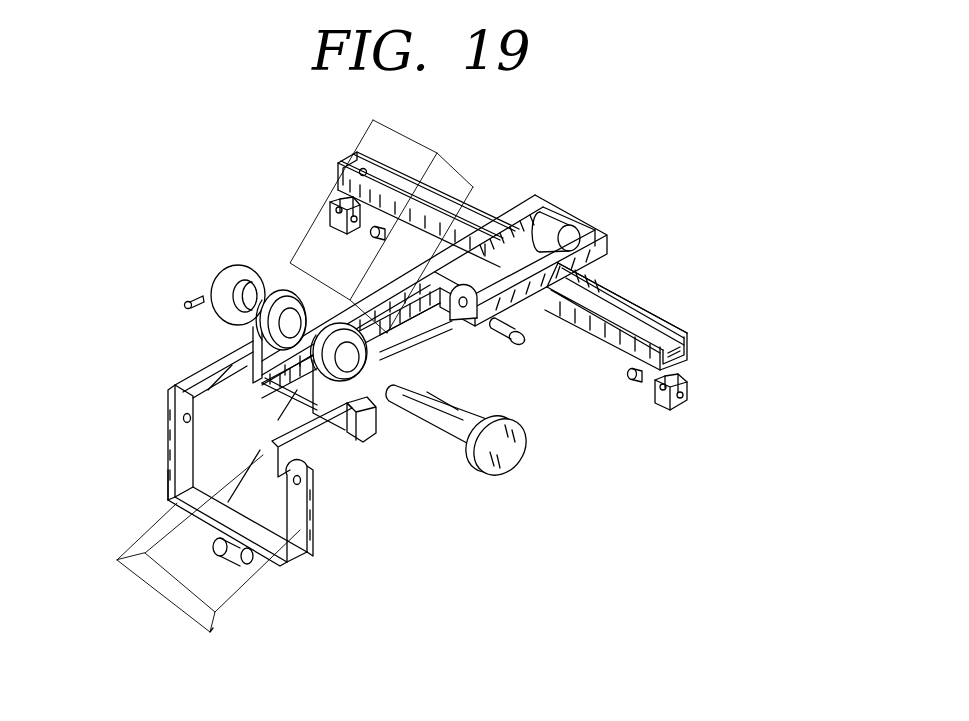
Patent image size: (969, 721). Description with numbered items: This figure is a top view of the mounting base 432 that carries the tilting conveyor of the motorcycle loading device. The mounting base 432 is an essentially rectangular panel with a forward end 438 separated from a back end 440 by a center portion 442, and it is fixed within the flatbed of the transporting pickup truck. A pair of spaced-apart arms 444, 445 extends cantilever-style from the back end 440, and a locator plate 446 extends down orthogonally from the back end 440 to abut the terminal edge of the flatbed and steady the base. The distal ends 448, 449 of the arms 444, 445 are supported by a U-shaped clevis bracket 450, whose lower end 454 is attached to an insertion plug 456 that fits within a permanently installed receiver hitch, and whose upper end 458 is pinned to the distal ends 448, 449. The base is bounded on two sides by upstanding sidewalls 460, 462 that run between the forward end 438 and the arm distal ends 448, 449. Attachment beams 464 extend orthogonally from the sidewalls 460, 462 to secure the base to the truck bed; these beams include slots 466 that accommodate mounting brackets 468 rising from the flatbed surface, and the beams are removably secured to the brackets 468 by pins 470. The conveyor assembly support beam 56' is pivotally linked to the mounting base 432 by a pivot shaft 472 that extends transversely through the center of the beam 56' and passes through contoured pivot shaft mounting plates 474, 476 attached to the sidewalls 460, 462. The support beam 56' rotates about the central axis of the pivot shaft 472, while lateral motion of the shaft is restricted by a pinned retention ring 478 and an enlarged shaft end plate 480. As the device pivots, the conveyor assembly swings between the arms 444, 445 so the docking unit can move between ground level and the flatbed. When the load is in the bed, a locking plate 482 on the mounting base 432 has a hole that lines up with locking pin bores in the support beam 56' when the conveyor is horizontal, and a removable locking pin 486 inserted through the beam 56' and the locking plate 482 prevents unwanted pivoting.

The mounting base 432 is at (537, 205).
The forward end 438 is at (593, 233).
The upstanding sidewall 462 is at (517, 217).
The attachment beams 464 is at (340, 176).
The upstanding sidewall 460 is at (556, 270).
The slots 466 is at (362, 170).
The mounting brackets 468 is at (330, 212).
The pins 470 is at (372, 232).
The pivot shaft mounting plate 476 is at (267, 283).
The pinned retention ring 478 is at (208, 292).
The spaced-apart arm 445 is at (217, 367).
The distal end 449 is at (177, 413).
The upper end 458 is at (167, 453).
The spaced-apart arm 444 is at (305, 478).
The insertion plug 456 is at (290, 562).
The locator plate 446 is at (345, 440).
The back end 440 is at (355, 405).
The center portion 442 is at (418, 316).
The pivot shaft mounting plate 474 is at (420, 340).
The removable locking pin 486 is at (527, 347).
The pivot shaft 472 is at (455, 438).
The enlarged shaft end plate 480 is at (484, 474).
The locking plate 482 is at (455, 322).
The conveyor assembly support beam 56' is at (182, 543).
The lower end 454 is at (213, 628).
The distal end 448 is at (248, 560).
The U-shaped clevis bracket 450 is at (270, 562).